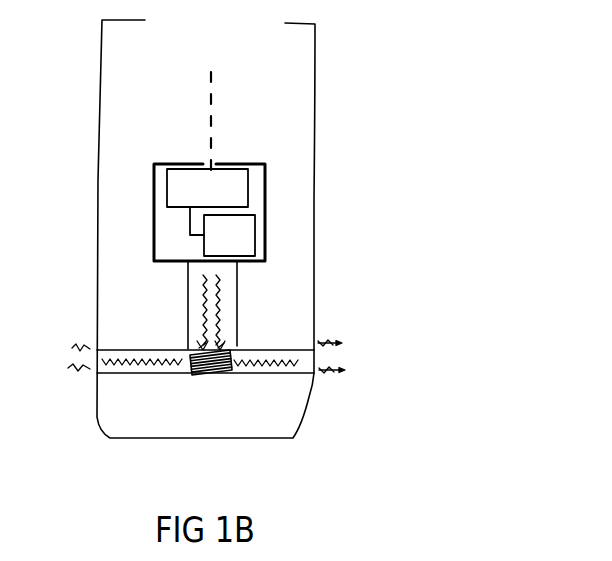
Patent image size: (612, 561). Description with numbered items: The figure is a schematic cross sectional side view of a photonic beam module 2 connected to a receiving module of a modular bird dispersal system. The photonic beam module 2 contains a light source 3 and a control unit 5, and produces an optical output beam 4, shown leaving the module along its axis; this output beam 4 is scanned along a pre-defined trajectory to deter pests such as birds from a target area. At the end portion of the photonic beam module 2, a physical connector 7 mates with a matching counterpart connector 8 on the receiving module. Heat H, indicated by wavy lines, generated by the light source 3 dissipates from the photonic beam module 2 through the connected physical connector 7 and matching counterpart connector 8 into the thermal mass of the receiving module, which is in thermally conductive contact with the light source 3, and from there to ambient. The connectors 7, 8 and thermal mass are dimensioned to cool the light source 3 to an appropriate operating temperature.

The photonic beam module 2 is at (270, 196).
The light source 3 is at (215, 203).
The optical output beam 4 is at (242, 86).
The control unit 5 is at (237, 250).
The physical connector 7 is at (177, 345).
The matching counterpart connector 8 is at (211, 385).
The heat H is at (233, 307).